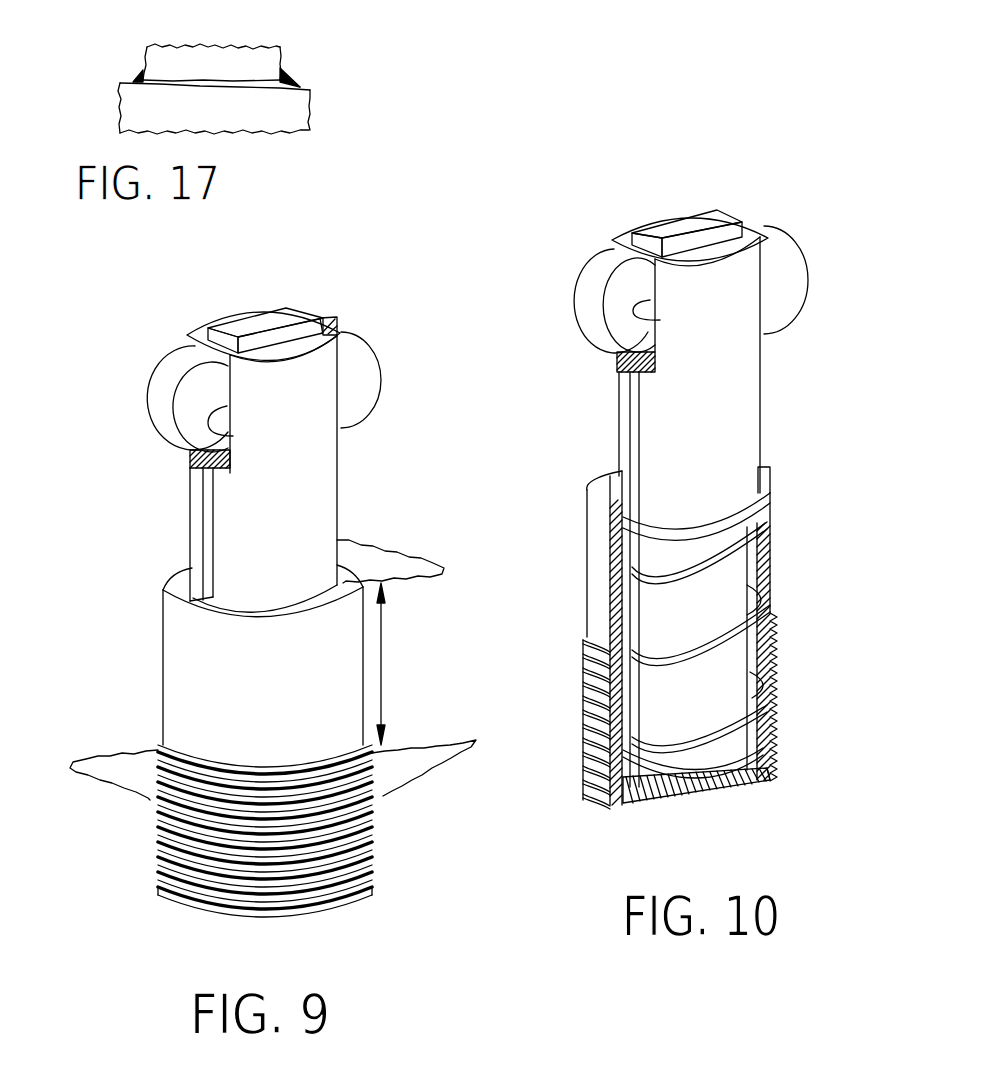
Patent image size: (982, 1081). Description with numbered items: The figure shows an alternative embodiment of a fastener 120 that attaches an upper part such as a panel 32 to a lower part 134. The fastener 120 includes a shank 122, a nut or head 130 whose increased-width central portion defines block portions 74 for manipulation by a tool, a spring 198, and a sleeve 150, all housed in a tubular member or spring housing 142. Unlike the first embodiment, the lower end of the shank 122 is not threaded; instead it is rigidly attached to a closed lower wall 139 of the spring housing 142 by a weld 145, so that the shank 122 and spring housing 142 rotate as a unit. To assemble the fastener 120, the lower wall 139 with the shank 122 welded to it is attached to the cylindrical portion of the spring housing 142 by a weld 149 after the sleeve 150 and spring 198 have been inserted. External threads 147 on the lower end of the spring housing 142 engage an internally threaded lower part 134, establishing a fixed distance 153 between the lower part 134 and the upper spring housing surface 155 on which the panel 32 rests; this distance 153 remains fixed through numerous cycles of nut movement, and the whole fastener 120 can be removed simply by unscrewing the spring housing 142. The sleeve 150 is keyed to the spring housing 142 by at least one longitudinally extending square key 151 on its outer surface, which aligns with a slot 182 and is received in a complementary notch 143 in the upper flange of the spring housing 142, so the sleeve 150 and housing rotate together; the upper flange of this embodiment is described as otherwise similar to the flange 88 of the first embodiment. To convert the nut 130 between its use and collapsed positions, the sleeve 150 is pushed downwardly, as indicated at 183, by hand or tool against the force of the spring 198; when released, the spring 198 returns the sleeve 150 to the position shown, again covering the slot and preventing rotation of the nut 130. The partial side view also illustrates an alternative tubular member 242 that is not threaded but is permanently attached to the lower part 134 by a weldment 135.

In FIG. 9, the panel 32 is at (410, 557).
In FIG. 9, the block portion 74 is at (275, 320).
In FIG. 10, the block portion 74 is at (660, 230).
In FIG. 10, the retaining ring 88 is at (767, 510).
In FIG. 9, the fastener 120 is at (281, 579).
In FIG. 10, the fastener 120 is at (674, 480).
In FIG. 10, the shank 122 is at (730, 662).
In FIG. 9, the nut or head 130 is at (347, 410).
In FIG. 10, the nut or head 130 is at (583, 343).
In FIG. 17, the lower part 134 is at (300, 113).
In FIG. 9, the lower part 134 is at (457, 743).
In FIG. 17, the weldment 135 is at (287, 77).
In FIG. 9, the lower wall 139 is at (333, 907).
In FIG. 10, the lower wall 139 is at (650, 803).
In FIG. 9, the spring housing 142 is at (307, 698).
In FIG. 10, the spring housing 142 is at (597, 572).
In FIG. 9, the notch 143 is at (197, 590).
In FIG. 10, the weld 145 is at (637, 760).
In FIG. 9, the external threads 147 is at (377, 813).
In FIG. 10, the external threads 147 is at (580, 790).
In FIG. 10, the weld 149 is at (757, 782).
In FIG. 9, the sleeve 150 is at (327, 500).
In FIG. 10, the sleeve 150 is at (733, 425).
In FIG. 9, the key 151 is at (190, 518).
In FIG. 10, the key 151 is at (617, 430).
In FIG. 9, the fixed distance 153 is at (385, 660).
In FIG. 9, the upper spring housing surface 155 is at (180, 577).
In FIG. 9, the slot 182 is at (233, 436).
In FIG. 10, the slot 182 is at (660, 320).
In FIG. 9, the downward push 183 is at (331, 290).
In FIG. 10, the spring 198 is at (773, 693).
In FIG. 17, the tubular member 242 is at (267, 50).